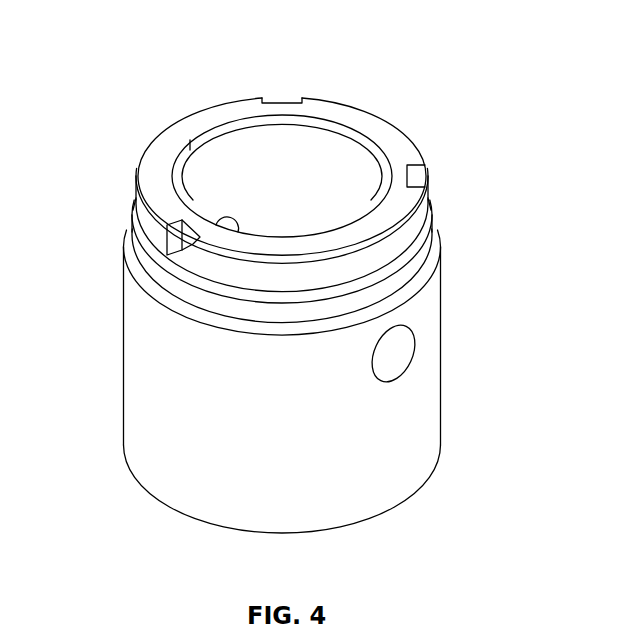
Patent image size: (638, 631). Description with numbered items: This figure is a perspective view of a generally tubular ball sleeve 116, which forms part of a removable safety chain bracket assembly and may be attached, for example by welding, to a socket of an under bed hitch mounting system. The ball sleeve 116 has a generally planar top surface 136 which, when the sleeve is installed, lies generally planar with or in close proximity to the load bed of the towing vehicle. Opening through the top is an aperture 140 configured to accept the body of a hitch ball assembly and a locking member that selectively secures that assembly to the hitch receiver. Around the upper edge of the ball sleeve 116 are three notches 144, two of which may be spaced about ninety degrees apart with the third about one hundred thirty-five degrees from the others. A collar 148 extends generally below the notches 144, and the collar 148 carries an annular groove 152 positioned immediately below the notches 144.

The ball sleeve 116 is at (470, 318).
The top surface 136 is at (371, 124).
The aperture 140 is at (190, 145).
The notch 144 is at (291, 101).
The collar 148 is at (420, 218).
The annular groove 152 is at (177, 282).